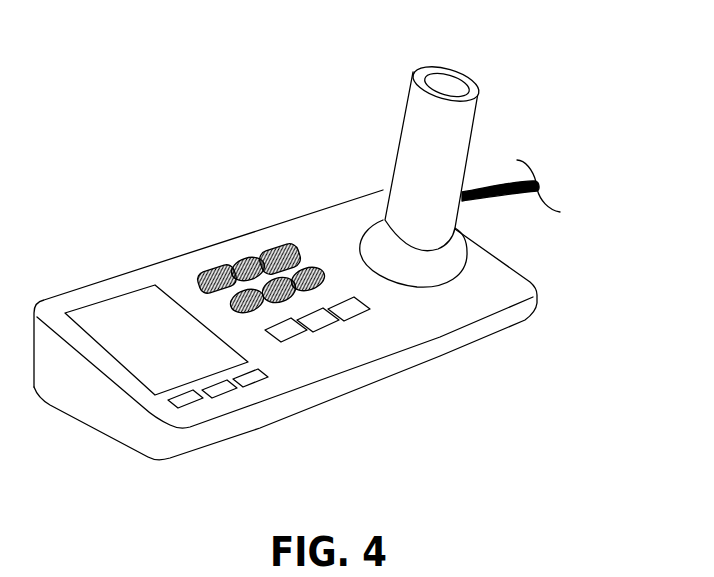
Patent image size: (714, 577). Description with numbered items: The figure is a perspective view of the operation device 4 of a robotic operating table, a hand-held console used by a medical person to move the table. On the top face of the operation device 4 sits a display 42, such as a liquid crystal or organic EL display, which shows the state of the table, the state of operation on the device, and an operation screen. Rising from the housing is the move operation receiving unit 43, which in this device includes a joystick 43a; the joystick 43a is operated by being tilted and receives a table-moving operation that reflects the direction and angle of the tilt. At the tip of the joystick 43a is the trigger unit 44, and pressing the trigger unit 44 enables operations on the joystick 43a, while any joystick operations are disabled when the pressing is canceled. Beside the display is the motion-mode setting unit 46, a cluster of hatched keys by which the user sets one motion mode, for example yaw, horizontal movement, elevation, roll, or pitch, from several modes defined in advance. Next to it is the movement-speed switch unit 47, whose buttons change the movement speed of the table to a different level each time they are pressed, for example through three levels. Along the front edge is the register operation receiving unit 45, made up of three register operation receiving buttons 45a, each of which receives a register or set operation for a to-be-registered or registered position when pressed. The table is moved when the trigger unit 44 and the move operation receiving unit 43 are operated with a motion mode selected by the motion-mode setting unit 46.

The operation device 4 is at (399, 43).
The display 42 is at (137, 313).
The move operation receiving unit 43 is at (480, 146).
The joystick 43a is at (452, 132).
The trigger unit 44 is at (448, 85).
The register operation receiving unit 45 is at (235, 397).
The register operation receiving button 45a is at (196, 403).
The motion-mode setting unit 46 is at (250, 252).
The movement-speed switch unit 47 is at (317, 318).